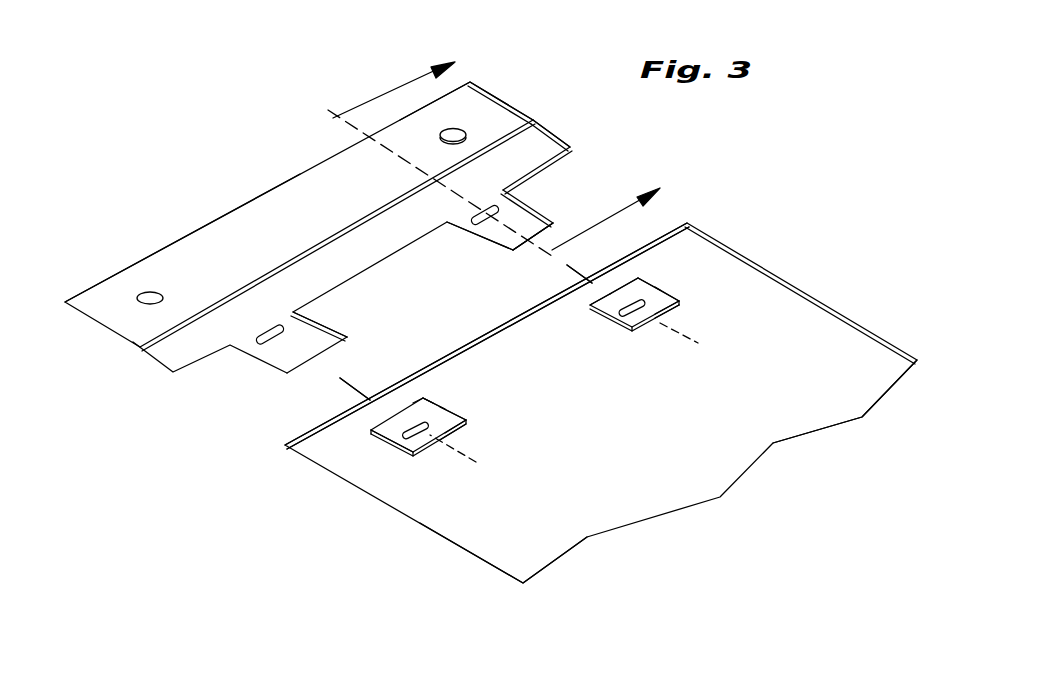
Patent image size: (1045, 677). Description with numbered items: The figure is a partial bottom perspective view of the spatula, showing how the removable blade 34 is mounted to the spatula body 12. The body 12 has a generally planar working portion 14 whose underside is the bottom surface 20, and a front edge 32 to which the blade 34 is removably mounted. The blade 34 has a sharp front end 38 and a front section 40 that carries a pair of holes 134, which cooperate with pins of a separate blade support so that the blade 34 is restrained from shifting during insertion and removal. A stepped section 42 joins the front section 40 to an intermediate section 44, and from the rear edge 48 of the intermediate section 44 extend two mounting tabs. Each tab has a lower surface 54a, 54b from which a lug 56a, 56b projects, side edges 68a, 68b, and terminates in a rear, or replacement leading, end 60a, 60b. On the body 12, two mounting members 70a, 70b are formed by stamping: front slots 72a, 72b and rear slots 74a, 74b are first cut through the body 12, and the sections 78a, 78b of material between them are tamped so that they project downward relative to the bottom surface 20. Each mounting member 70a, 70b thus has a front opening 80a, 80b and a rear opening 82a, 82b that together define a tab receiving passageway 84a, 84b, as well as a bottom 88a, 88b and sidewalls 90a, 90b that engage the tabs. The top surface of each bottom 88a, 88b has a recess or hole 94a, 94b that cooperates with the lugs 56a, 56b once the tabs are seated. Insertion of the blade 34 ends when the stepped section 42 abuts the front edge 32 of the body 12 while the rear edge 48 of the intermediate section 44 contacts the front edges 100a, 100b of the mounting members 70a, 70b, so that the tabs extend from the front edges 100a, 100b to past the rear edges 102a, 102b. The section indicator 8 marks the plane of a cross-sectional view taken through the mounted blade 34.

The section line 8- 8 is at (501, 149).
The body 12 is at (767, 492).
The working portion 14 is at (512, 556).
The bottom surface 20 is at (830, 413).
The front edge 32 is at (487, 333).
The blade 34 is at (300, 203).
The front end 38 is at (193, 230).
The front section 40 is at (477, 110).
The stepped section 42 is at (540, 145).
The intermediate section 44 is at (552, 136).
The rear edge 48 is at (390, 255).
The lower surface 54a is at (262, 366).
The lower surface 54b is at (530, 221).
The lug 56a is at (260, 340).
The lug 56b is at (497, 204).
The replacement leading end 60a is at (293, 378).
The replacement leading end 60b is at (513, 253).
The side edge 68a is at (330, 327).
The side edge 68b is at (556, 189).
The mounting member 70a is at (400, 464).
The mounting member 70b is at (717, 337).
The front slot 72a is at (372, 433).
The front slot 72b is at (652, 283).
The rear slot 74a is at (469, 422).
The rear slot 74b is at (681, 304).
The section 78a is at (393, 448).
The section 78b is at (670, 292).
The front opening 80a is at (403, 412).
The front opening 80b is at (570, 287).
The rear opening 82a is at (467, 416).
The rear opening 82b is at (664, 310).
The tab receiving passageway 84a is at (427, 397).
The tab receiving passageway 84b is at (597, 296).
The bottom 88a is at (433, 441).
The bottom 88b is at (657, 323).
The sidewalls 90a is at (450, 404).
The sidewalls 90b is at (680, 302).
The hole 94a is at (423, 453).
The hole 94b is at (633, 324).
The front edge 100a is at (433, 403).
The front edge 100b is at (620, 290).
The rear edge 102a is at (480, 464).
The rear edge 102b is at (652, 318).
The holes 134 is at (148, 297).